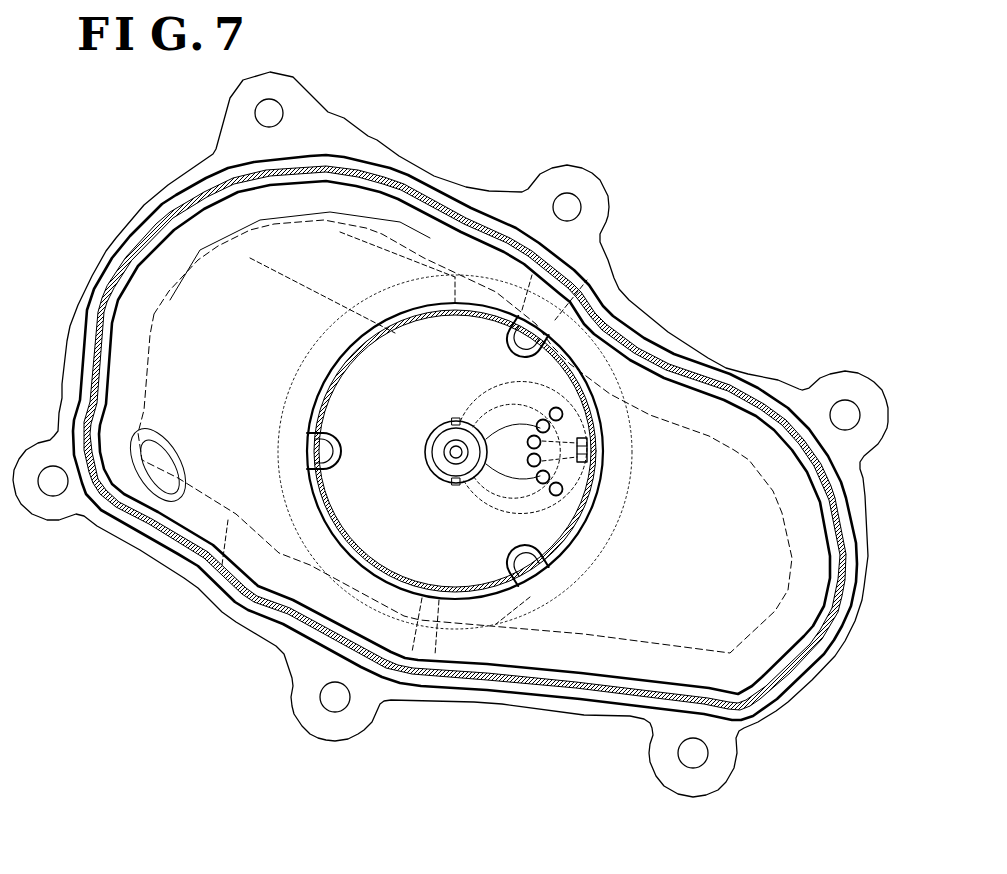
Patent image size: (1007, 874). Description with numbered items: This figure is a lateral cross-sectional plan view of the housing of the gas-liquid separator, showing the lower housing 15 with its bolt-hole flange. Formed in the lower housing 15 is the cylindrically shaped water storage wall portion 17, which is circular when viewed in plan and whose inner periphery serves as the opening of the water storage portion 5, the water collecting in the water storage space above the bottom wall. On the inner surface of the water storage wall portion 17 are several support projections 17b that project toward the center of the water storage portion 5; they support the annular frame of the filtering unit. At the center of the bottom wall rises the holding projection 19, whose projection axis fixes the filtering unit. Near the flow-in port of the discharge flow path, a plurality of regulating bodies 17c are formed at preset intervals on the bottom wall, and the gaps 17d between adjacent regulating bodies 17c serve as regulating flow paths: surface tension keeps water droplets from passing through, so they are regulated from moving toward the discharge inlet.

The water storage portion 5 is at (408, 362).
The lower housing 15 is at (207, 608).
The water storage wall portion 17 is at (334, 337).
The support projections 17b is at (548, 310).
The regulating bodies 17c is at (510, 410).
The gaps 17d is at (497, 478).
The holding projection 19 is at (447, 444).